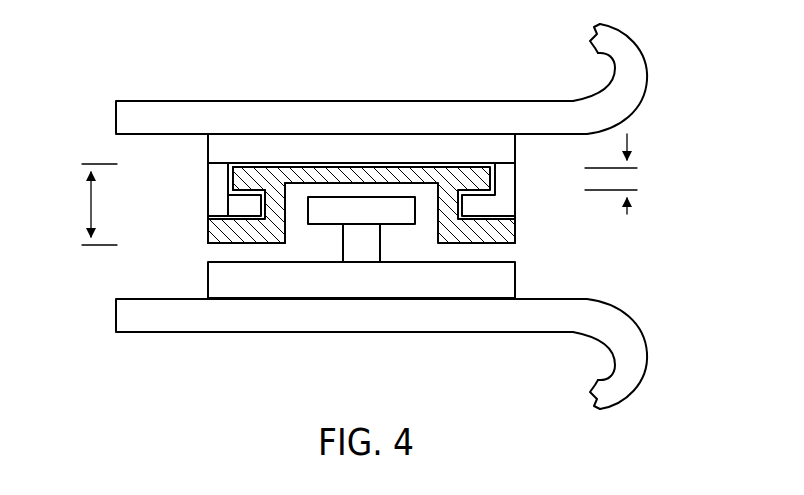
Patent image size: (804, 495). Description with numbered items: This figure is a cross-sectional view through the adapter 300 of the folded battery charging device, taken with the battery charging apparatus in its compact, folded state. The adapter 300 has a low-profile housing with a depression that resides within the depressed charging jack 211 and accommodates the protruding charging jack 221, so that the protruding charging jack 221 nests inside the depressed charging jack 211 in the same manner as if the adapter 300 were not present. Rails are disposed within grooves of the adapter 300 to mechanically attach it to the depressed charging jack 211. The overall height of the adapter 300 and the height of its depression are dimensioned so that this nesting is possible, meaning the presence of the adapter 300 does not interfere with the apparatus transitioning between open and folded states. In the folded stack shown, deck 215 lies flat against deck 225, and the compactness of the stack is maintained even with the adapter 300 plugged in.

The deck 215 is at (389, 153).
The deck 225 is at (503, 287).
The depressed charging jack 211 is at (505, 185).
The adapter 300 is at (515, 232).
The protruding charging jack 221 is at (330, 214).